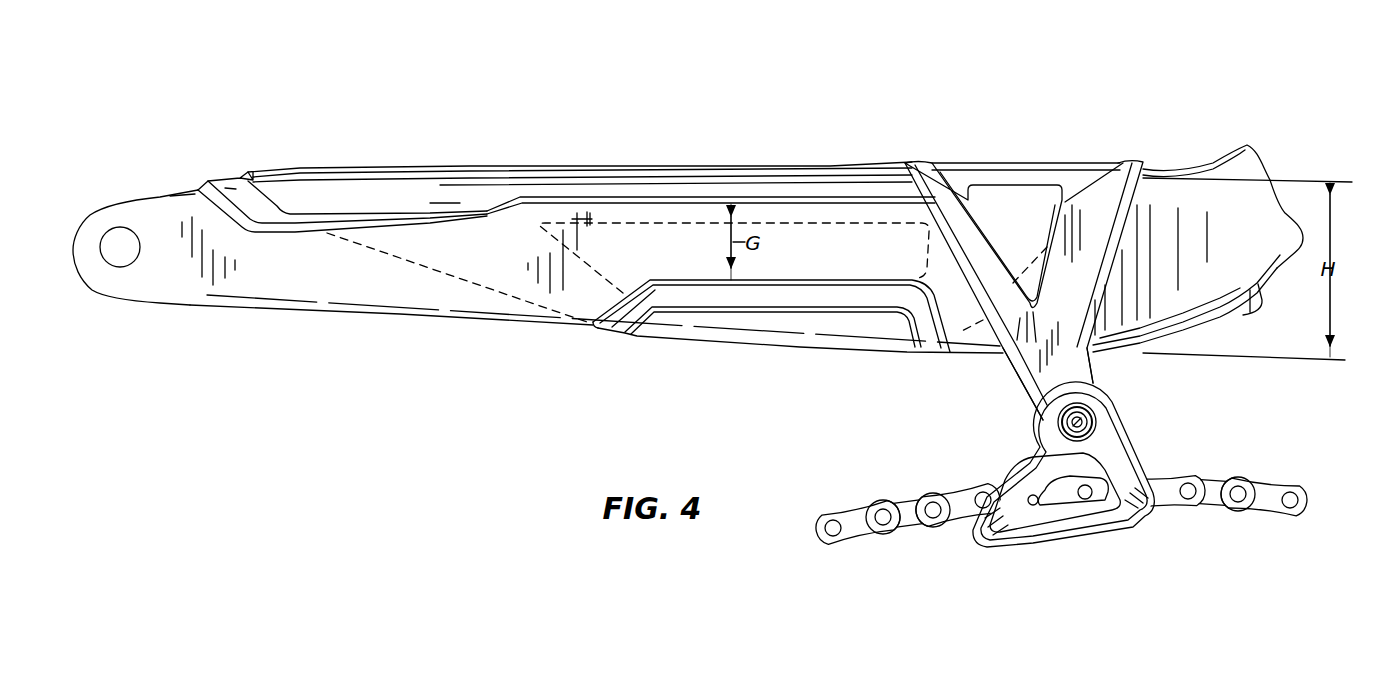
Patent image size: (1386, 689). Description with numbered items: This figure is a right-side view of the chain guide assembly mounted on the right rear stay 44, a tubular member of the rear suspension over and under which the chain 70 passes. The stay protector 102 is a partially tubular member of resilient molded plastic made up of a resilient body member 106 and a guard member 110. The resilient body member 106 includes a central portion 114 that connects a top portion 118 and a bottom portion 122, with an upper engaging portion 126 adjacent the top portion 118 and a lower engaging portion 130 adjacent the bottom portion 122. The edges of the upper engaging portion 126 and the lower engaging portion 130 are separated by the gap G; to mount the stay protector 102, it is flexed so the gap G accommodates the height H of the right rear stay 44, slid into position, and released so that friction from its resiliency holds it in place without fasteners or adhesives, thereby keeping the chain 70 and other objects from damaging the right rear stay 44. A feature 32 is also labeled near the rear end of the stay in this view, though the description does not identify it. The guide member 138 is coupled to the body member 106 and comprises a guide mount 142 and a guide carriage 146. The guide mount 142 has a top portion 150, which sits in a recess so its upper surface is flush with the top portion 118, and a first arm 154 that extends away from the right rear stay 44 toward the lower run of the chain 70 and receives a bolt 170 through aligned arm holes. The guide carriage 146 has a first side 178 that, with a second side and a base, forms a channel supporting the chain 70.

The stay protector 102 is at (622, 106).
The resilient body member 106 is at (205, 156).
The guard member 110 is at (385, 168).
The central portion 114 is at (497, 253).
The top portion 118 is at (223, 176).
The bottom portion 122 is at (693, 343).
The upper engaging portion 126 is at (707, 187).
The lower engaging portion 130 is at (656, 282).
The guide member 138 is at (1249, 101).
The guide mount 142 is at (1148, 141).
The guide carriage 146 is at (1163, 447).
The top portion 150 is at (1006, 162).
The first arm 154 is at (1057, 307).
The bolt 170 is at (1058, 434).
The first side 178 is at (981, 532).
The chain 70 is at (853, 515).
The right rear stay 44 is at (1243, 245).
The lower lip 32 is at (1243, 317).